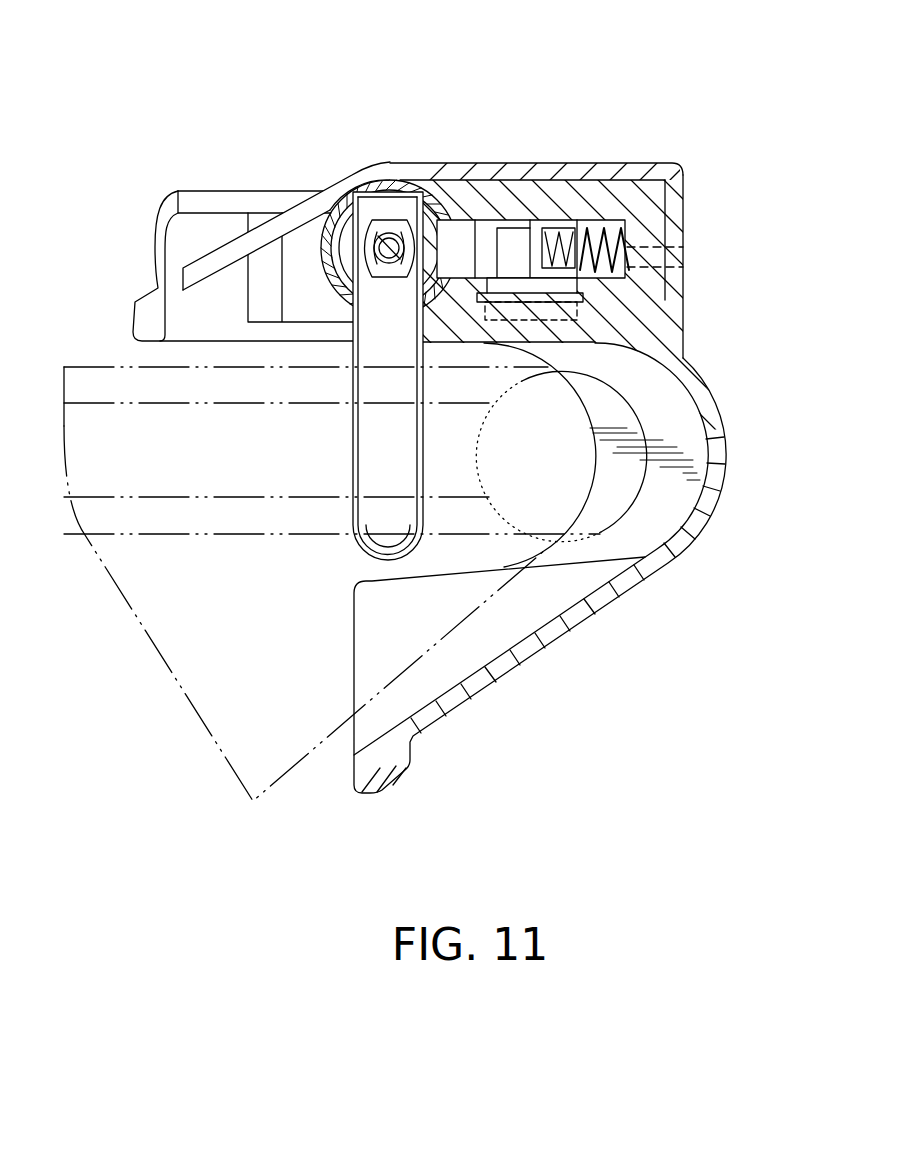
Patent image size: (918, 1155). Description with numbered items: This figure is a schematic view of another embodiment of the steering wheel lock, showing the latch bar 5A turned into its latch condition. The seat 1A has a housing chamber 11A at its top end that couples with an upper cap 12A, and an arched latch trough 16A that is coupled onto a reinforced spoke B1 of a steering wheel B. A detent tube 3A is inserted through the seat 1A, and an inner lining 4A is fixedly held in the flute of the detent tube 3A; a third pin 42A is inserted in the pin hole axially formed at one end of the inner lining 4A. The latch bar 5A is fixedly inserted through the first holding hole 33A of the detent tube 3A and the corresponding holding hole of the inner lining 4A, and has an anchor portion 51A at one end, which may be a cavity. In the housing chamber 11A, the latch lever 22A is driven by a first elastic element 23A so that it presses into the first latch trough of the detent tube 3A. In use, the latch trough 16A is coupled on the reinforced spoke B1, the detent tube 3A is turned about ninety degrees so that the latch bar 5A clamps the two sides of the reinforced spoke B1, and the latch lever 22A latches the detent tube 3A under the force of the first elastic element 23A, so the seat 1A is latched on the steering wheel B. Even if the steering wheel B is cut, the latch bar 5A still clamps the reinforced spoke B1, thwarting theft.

The seat 1A is at (711, 428).
The detent tube 3A is at (432, 198).
The inner lining 4A is at (298, 200).
The latch bar 5A is at (397, 485).
The housing chamber 11A is at (578, 287).
The upper cap 12A is at (598, 167).
The latch trough 16A is at (687, 473).
The latch lever 22A is at (466, 242).
The first elastic element 23A is at (670, 163).
The first holding hole 33A is at (450, 187).
The third pin 42A is at (388, 236).
The anchor portion 51A is at (352, 192).
The steering wheel B is at (205, 523).
The reinforced spoke B1 is at (113, 464).